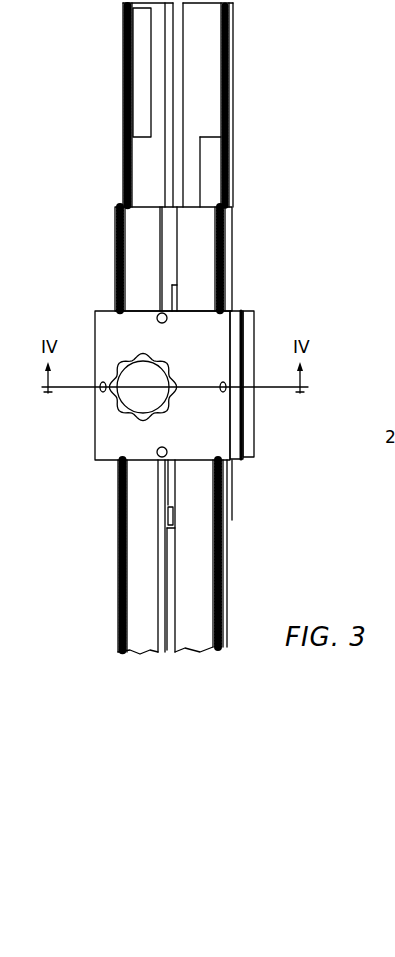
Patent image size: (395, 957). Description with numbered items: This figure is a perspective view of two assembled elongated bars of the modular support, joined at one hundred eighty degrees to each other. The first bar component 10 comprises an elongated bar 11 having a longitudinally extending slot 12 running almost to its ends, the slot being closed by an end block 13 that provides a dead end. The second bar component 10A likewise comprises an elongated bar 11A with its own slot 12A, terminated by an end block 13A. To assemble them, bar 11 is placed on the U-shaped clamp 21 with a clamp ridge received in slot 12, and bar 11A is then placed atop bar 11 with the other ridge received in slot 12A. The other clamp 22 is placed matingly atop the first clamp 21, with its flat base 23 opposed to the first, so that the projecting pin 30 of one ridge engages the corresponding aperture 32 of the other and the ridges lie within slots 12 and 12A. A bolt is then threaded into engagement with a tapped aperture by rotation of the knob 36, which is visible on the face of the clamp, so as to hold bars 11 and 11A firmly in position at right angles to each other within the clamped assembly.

The bar component 10 is at (239, 105).
The elongated bar 11 is at (205, 58).
The slot 12 is at (180, 173).
The end block 13A is at (168, 247).
The aperture 32 is at (166, 314).
The flat base 22 is at (215, 333).
The U-shaped clamp 21 is at (250, 422).
The flat base 23 is at (252, 333).
The knob 36 is at (137, 377).
The projecting pin 30 is at (160, 456).
The end block 13 is at (172, 515).
The slot 12A is at (173, 557).
The bar component 10A is at (200, 557).
The elongated bar 11A is at (145, 595).